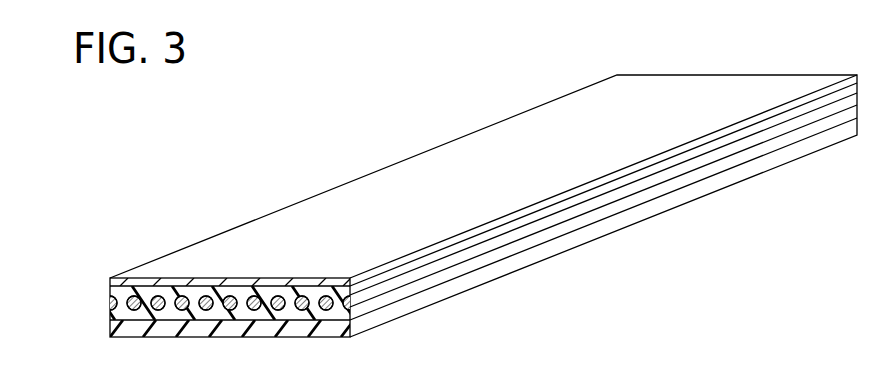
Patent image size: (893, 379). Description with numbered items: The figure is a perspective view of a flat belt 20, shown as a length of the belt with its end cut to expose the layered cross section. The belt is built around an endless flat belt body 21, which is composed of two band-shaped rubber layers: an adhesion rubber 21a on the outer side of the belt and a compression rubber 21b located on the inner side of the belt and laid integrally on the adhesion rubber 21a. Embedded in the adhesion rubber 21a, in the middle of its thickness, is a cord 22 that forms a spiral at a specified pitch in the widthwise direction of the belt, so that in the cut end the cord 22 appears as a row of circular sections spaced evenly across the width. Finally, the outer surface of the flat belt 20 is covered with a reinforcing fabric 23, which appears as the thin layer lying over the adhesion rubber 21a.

The flat belt 20 is at (423, 116).
The flat belt body 21 is at (555, 255).
The adhesion rubber 21a is at (115, 312).
The compression rubber 21b is at (115, 328).
The cord 22 is at (250, 292).
The reinforcing fabric 23 is at (290, 280).